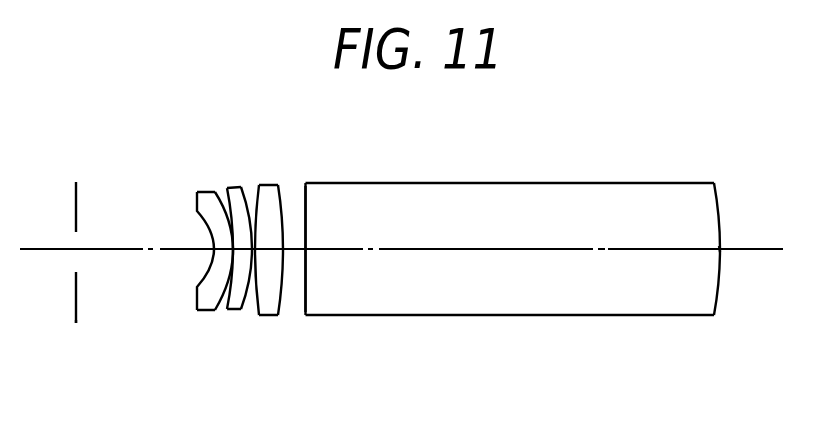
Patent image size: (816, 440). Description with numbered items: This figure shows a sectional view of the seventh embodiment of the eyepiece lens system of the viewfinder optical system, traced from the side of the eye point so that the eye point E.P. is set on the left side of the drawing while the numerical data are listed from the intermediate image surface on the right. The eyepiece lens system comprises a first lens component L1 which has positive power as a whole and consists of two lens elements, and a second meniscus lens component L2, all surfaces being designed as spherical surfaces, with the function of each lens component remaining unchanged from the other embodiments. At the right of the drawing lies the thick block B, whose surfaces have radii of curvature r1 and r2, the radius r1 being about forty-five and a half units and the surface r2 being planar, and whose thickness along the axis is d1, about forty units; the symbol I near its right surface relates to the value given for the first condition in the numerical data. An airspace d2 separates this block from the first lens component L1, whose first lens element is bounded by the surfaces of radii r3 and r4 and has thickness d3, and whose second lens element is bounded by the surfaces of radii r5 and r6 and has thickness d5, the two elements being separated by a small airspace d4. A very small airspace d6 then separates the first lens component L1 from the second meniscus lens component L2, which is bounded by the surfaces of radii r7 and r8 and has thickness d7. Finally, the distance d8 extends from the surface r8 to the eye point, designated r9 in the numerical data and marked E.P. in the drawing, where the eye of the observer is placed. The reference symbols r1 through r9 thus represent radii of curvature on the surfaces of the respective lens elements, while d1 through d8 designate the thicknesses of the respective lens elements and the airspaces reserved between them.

The radius of curvature of first surface r1 is at (719, 190).
The radius of curvature of second surface r2 is at (305, 198).
The radius of curvature of third surface r3 is at (287, 188).
The radius of curvature of fourth surface r4 is at (259, 186).
The radius of curvature of fifth surface r5 is at (242, 188).
The radius of curvature of sixth surface r6 is at (227, 192).
The radius of curvature of seventh surface r7 is at (208, 192).
The radius of curvature of eighth surface r8 is at (198, 215).
The eye point r9 is at (77, 202).
The thickness of first lens element d1 is at (425, 250).
The airspace d2 is at (301, 254).
The thickness of lens element d3 is at (278, 275).
The airspace d4 is at (250, 300).
The thickness of lens element d5 is at (222, 245).
The airspace d6 is at (228, 258).
The thickness of lens element d7 is at (230, 256).
The airspace to eye point d8 is at (110, 254).
The block (prism/filter) B is at (512, 295).
The value related to condition (1) I is at (720, 249).
The eye point E.P. is at (79, 341).
The first lens component L1 is at (290, 366).
The second meniscus lens component L2 is at (201, 311).